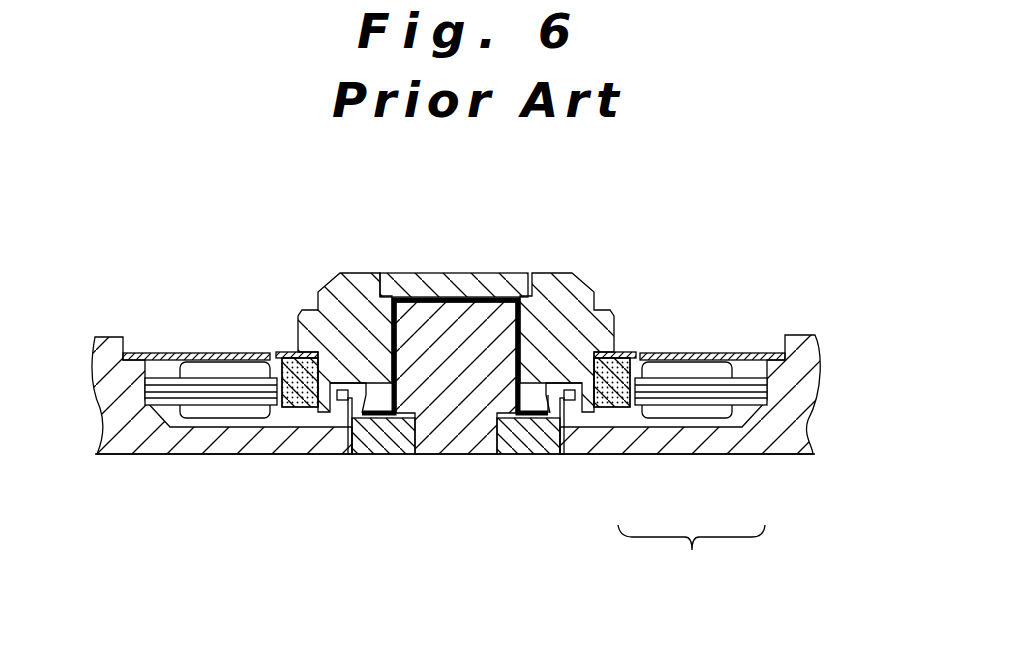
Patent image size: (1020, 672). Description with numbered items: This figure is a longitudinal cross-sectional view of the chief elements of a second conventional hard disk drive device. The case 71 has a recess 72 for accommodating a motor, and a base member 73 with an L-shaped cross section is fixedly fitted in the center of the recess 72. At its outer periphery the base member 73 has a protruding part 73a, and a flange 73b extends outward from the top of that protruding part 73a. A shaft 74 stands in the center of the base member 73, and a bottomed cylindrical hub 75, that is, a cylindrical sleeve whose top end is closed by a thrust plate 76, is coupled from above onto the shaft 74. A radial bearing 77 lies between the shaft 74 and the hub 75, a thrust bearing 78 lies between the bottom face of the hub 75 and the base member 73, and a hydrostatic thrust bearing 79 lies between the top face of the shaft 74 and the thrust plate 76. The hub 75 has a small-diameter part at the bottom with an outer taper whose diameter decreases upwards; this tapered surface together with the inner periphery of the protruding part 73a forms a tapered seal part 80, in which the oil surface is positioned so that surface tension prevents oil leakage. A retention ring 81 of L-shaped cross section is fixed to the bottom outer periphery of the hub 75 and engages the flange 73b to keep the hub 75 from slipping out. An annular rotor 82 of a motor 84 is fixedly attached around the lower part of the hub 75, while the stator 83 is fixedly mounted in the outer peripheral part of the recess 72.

The case 71 is at (121, 387).
The recess 72 is at (287, 420).
The base member 73 is at (390, 430).
The protruding part 73a is at (350, 456).
The flange 73b is at (343, 398).
The shaft 74 is at (455, 398).
The hub 75 is at (357, 326).
The thrust plate 76 is at (463, 286).
The radial bearing 77 is at (572, 324).
The thrust bearing 78 is at (514, 418).
The hydrostatic thrust bearing 79 is at (502, 300).
The tapered seal part 80 is at (537, 417).
The retention ring 81 is at (578, 408).
The annular rotor 82 is at (614, 405).
The stator 83 is at (697, 393).
The motor 84 is at (691, 561).